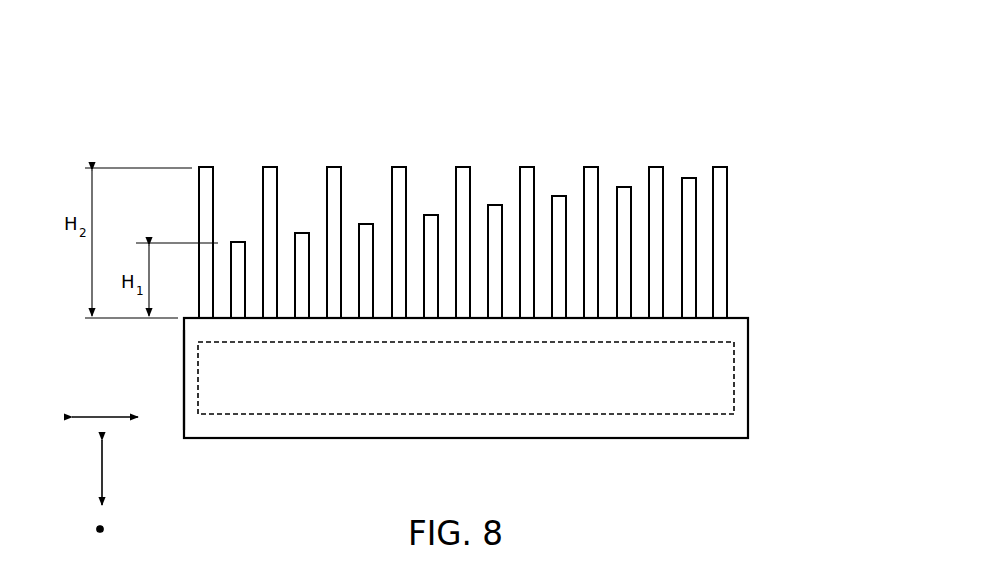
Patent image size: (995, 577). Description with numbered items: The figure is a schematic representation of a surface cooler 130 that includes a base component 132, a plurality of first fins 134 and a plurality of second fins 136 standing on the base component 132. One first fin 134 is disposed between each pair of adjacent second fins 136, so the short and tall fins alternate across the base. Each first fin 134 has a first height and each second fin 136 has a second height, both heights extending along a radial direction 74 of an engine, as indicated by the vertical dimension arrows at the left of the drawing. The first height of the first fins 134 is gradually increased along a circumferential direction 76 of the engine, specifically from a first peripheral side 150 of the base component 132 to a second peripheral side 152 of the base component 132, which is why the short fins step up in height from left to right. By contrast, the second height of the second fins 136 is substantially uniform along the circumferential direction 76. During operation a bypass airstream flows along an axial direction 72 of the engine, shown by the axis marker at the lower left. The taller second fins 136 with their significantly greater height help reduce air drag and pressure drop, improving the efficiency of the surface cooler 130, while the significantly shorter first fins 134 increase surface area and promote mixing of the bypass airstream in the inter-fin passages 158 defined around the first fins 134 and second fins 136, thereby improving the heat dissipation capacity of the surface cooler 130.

The surface cooler 130 is at (485, 249).
The base component 132 is at (751, 350).
The first fins 134 is at (557, 196).
The second fins 136 is at (525, 167).
The first peripheral side 150 is at (184, 371).
The second peripheral side 152 is at (748, 392).
The inter-fin passages 158 is at (253, 258).
The axial direction 72 is at (97, 529).
The radial direction 74 is at (103, 462).
The circumferential direction 76 is at (115, 414).